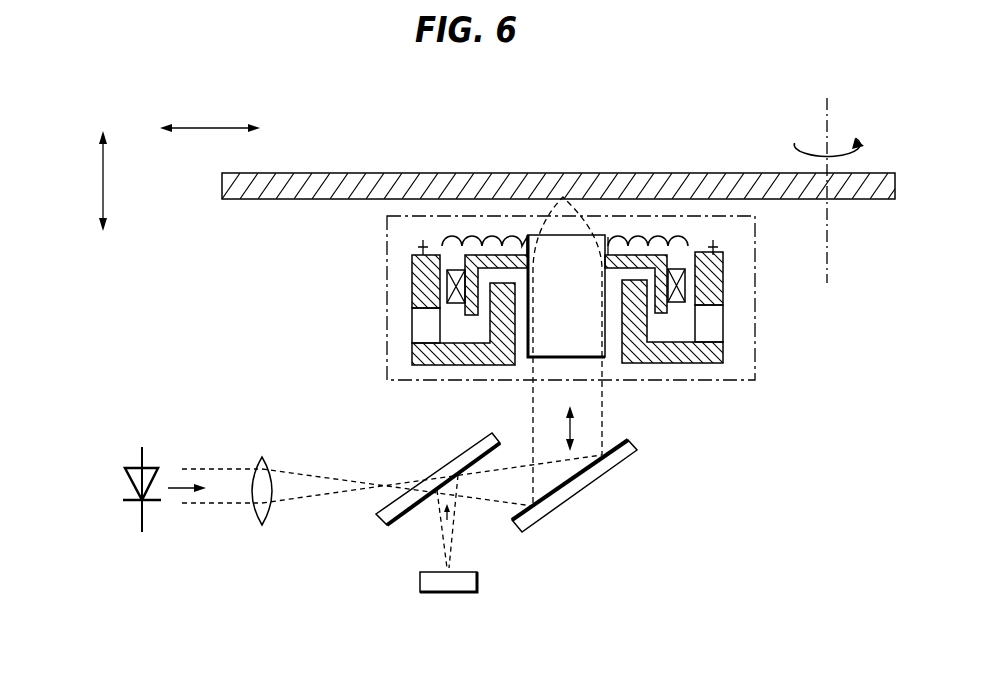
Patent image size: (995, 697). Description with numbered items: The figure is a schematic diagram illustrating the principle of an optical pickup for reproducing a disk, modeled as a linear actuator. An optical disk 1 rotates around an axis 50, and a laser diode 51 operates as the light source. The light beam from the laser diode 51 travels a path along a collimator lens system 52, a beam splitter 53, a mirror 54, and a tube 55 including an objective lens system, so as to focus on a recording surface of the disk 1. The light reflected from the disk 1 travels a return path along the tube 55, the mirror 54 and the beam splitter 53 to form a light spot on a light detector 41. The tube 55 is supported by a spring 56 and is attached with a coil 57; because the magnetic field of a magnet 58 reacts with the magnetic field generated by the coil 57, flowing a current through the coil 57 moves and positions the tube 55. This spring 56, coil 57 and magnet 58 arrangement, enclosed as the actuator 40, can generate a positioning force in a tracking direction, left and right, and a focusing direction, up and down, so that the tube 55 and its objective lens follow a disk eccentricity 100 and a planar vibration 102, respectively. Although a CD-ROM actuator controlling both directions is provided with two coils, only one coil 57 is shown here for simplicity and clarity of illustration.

The optical disk 1 is at (467, 173).
The actuator 40 is at (755, 360).
The light detector 41 is at (460, 593).
The axis 50 is at (828, 100).
The laser diode 51 is at (147, 466).
The collimator lens system 52 is at (262, 526).
The beam splitter 53 is at (378, 516).
The mirror 54 is at (573, 495).
The tube 55 is at (607, 357).
The spring 56 is at (452, 232).
The coil 57 is at (680, 307).
The magnet 58 is at (412, 327).
The disk eccentricity 100 is at (217, 127).
The planar vibration 102 is at (103, 185).